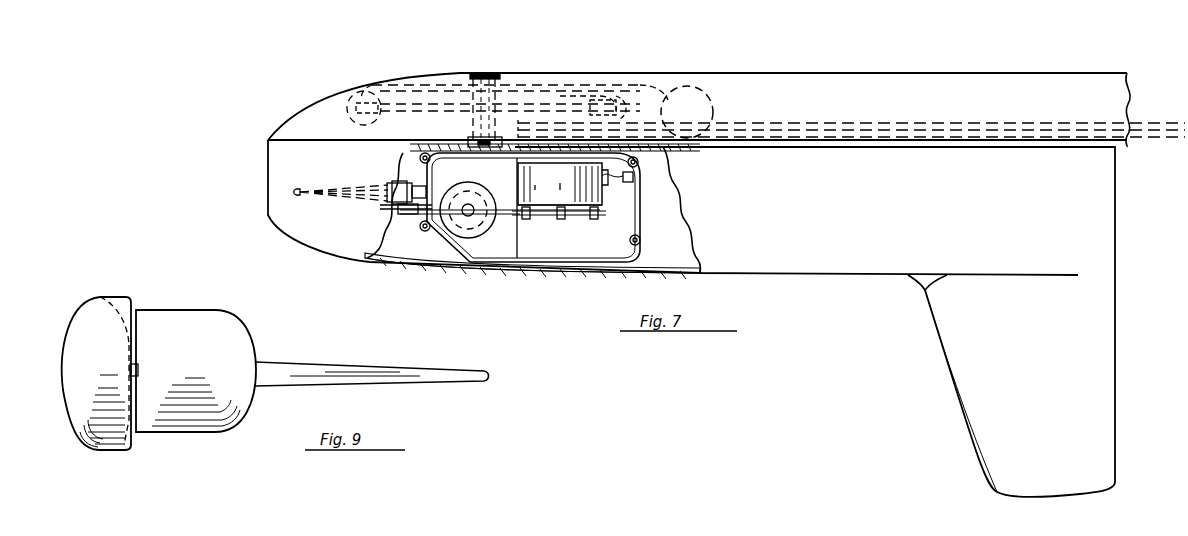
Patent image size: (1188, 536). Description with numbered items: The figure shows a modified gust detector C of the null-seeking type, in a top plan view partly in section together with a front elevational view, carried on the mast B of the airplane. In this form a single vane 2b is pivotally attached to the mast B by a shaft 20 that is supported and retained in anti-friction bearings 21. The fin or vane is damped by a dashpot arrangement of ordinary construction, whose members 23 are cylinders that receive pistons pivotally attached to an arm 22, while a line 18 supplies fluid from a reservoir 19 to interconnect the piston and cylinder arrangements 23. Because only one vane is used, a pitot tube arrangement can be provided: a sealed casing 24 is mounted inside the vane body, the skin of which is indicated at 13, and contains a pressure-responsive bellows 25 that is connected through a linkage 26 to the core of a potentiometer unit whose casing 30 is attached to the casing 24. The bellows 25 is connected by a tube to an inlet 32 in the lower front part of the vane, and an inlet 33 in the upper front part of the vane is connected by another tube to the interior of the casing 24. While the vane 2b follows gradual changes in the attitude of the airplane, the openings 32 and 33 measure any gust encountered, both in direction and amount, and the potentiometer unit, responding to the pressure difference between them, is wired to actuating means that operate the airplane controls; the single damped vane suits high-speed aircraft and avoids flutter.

In FIG. 7, the fuselage skin 13 is at (505, 275).
In FIG. 7, the line 18 is at (545, 86).
In FIG. 7, the reservoir 19 is at (712, 106).
In FIG. 7, the shaft 20 is at (500, 98).
In FIG. 7, the anti-friction bearings 21 is at (514, 73).
In FIG. 7, the arm 22 is at (588, 100).
In FIG. 7, the dashpot members 23 is at (355, 108).
In FIG. 7, the sealed casing 24 is at (446, 252).
In FIG. 7, the pressure-responsive bellows 25 is at (474, 194).
In FIG. 7, the linkage 26 is at (544, 213).
In FIG. 7, the potentiometer casing 30 is at (602, 198).
In FIG. 9, the inlet 32 is at (180, 400).
In FIG. 9, the inlet 33 is at (180, 352).
In FIG. 7, the vane 2b is at (954, 358).
In FIG. 9, the vane 2b is at (436, 372).
In FIG. 7, the mast B is at (1031, 85).
In FIG. 9, the mast B is at (63, 398).
In FIG. 7, the gust detector C is at (282, 168).
In FIG. 9, the gust detector C is at (243, 333).